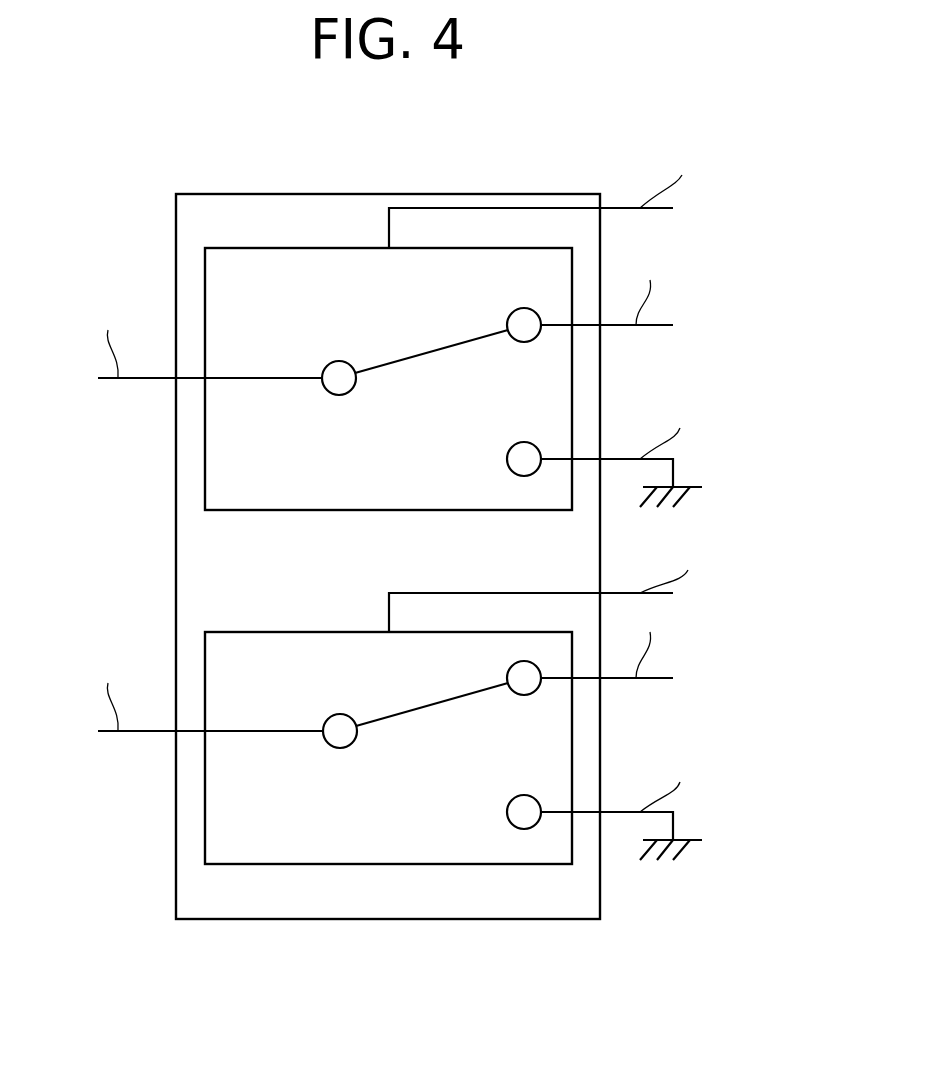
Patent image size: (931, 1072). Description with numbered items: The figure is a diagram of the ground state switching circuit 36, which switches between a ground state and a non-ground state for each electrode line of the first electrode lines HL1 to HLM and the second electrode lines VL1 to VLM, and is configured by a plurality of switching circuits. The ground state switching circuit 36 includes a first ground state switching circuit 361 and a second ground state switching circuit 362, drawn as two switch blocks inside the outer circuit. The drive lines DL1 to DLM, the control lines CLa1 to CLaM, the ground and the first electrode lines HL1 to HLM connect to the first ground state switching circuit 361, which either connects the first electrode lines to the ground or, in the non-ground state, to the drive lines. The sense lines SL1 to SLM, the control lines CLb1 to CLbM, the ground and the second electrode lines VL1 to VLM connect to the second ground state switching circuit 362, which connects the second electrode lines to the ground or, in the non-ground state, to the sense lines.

The ground state switching circuit 36 is at (487, 194).
The first ground state switching circuit 361 is at (283, 248).
The second ground state switching circuit 362 is at (283, 632).